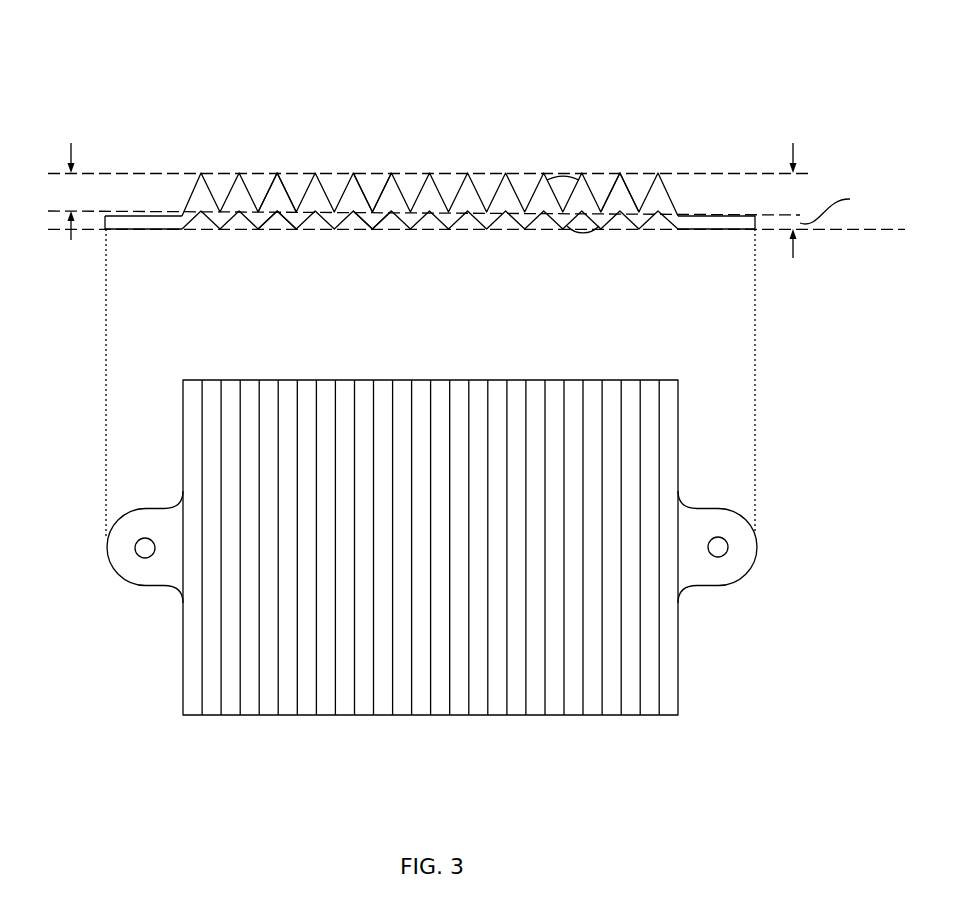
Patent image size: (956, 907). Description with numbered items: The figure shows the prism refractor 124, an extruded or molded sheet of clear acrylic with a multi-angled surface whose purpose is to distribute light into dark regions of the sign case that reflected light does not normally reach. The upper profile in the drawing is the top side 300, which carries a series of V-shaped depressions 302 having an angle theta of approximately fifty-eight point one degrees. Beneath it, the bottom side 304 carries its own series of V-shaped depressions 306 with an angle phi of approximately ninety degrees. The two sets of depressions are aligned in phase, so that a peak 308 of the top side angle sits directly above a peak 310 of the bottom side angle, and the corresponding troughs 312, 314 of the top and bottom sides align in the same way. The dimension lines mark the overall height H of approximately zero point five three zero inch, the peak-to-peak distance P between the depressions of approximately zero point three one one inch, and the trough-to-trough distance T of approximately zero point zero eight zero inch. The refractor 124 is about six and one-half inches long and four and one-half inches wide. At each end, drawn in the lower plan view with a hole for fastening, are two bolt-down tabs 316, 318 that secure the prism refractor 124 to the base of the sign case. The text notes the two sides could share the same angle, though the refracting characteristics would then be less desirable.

The prism refractor 124 is at (791, 100).
The top side 300 is at (474, 182).
The V-shaped depressions 302 is at (627, 182).
The bottom side 304 is at (698, 231).
The V-shaped depressions 306 is at (512, 228).
The peak 308 is at (277, 175).
The peak 310 is at (278, 215).
The trough 312 is at (372, 210).
The trough 314 is at (372, 231).
The bolt-down tab 316 is at (757, 553).
The bolt-down tab 318 is at (110, 572).